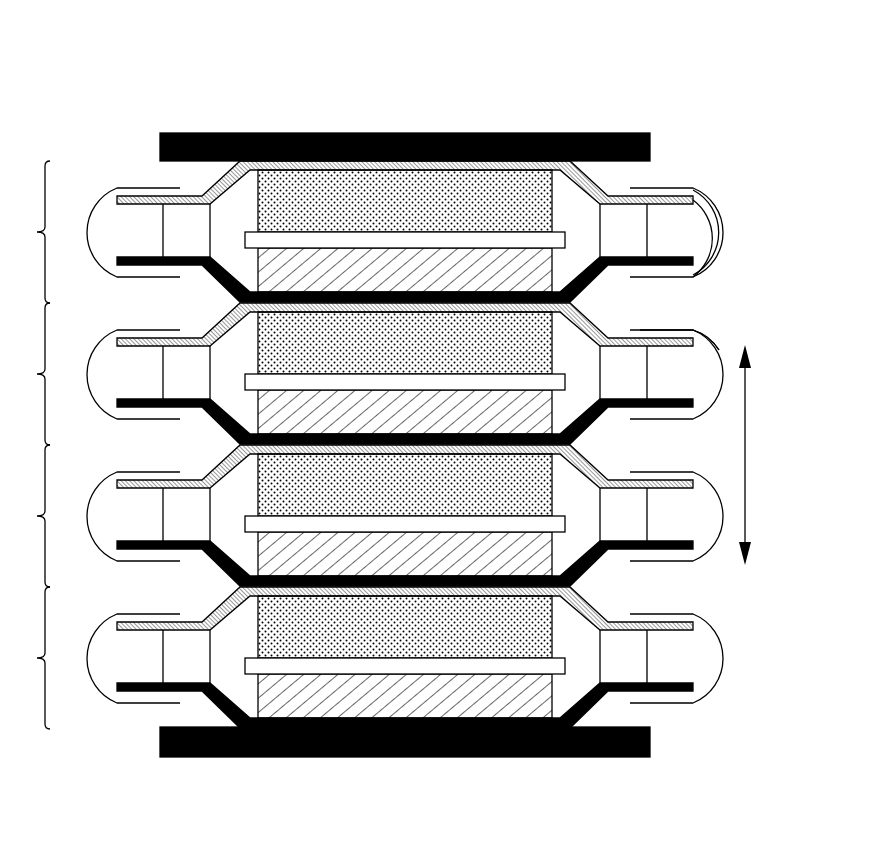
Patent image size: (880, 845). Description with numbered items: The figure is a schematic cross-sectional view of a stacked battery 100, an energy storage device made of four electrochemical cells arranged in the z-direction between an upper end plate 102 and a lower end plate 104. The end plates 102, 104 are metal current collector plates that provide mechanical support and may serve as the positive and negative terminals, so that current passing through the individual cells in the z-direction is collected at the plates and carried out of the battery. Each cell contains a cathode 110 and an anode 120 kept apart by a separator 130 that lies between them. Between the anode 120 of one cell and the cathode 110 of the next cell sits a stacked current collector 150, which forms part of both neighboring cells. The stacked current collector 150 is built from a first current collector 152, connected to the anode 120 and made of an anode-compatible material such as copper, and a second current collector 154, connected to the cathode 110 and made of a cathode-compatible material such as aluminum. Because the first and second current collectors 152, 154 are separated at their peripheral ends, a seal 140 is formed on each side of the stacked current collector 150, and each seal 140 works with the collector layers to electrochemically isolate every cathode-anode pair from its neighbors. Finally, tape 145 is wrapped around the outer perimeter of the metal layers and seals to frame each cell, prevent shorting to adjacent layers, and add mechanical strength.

The stacked battery 100 is at (258, 76).
The end plate 102 is at (527, 133).
The end plate 104 is at (275, 757).
The cathode 110 is at (258, 190).
The anode 120 is at (258, 253).
The separator 130 is at (245, 662).
The seal 140 is at (648, 240).
The tape 145 is at (683, 187).
The stacked current collector 150 is at (774, 203).
The first current collector 152 is at (719, 230).
The second current collector 154 is at (705, 340).